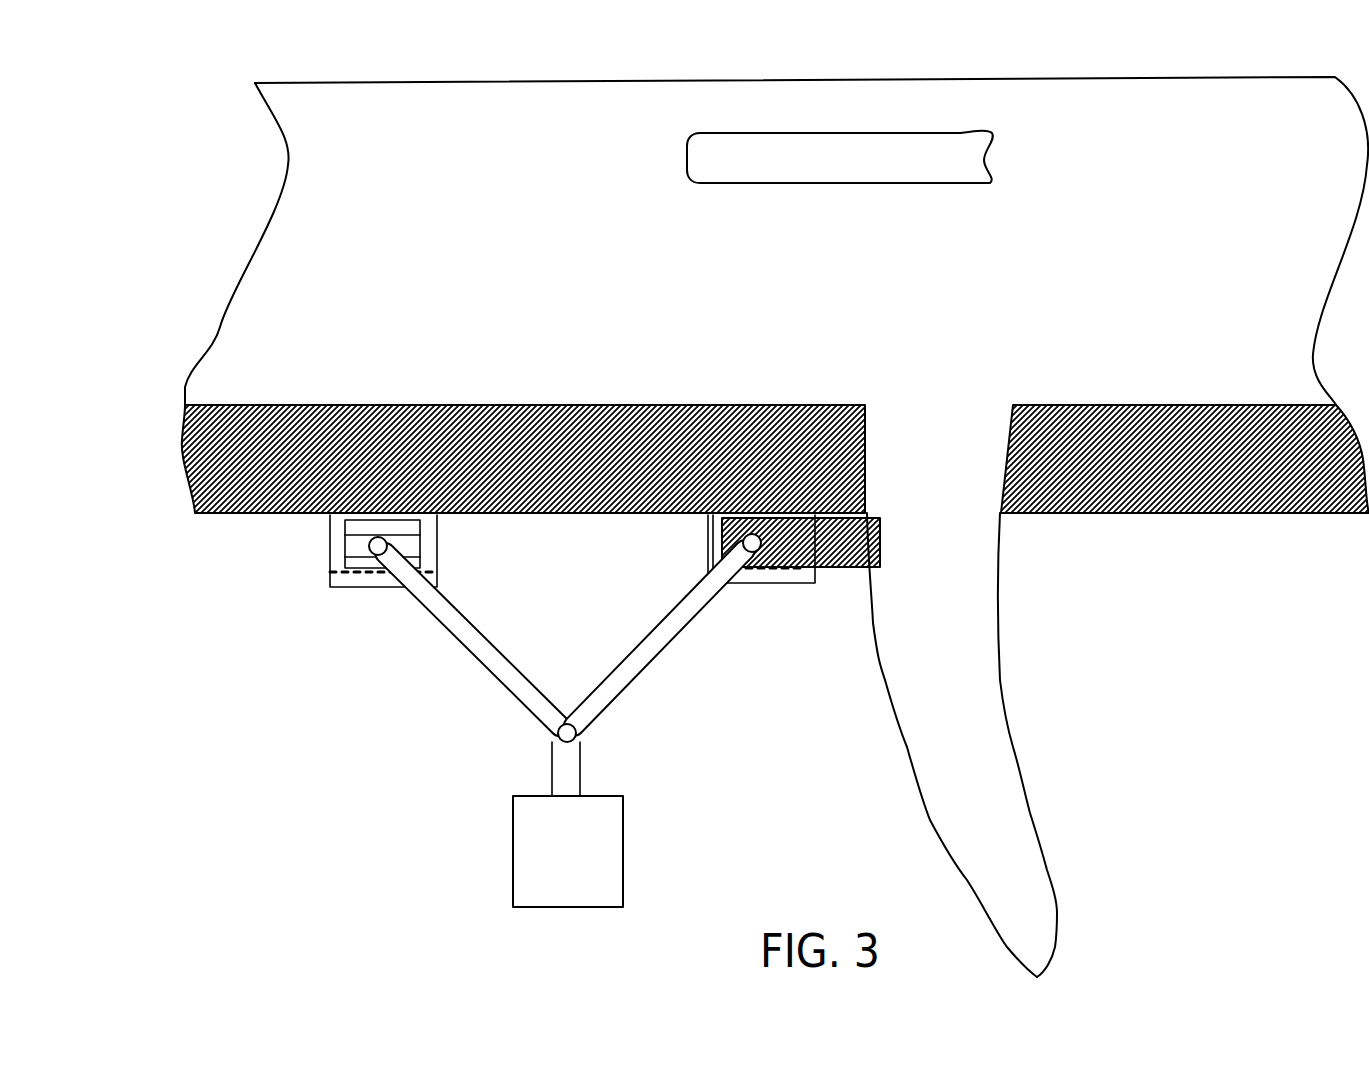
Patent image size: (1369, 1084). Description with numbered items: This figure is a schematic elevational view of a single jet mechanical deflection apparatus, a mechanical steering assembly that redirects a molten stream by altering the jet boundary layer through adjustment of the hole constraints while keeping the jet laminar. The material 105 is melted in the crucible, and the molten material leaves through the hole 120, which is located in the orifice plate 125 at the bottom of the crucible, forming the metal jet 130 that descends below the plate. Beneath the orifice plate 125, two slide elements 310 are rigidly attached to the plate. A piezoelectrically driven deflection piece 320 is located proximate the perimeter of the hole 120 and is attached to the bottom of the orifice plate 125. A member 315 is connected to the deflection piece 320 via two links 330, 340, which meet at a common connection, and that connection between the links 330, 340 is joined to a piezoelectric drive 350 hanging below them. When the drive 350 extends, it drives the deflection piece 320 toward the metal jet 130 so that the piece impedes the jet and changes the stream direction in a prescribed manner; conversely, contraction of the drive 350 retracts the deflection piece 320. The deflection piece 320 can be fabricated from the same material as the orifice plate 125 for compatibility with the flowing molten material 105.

The material 105 is at (352, 290).
The hole 120 is at (930, 495).
The orifice plate 125 is at (1191, 480).
The metal jet 130 is at (990, 722).
The slide elements 310 is at (710, 543).
The member 315 is at (360, 546).
The deflection piece 320 is at (806, 574).
The link 330 is at (503, 692).
The link 340 is at (635, 683).
The piezoelectric drive 350 is at (537, 853).